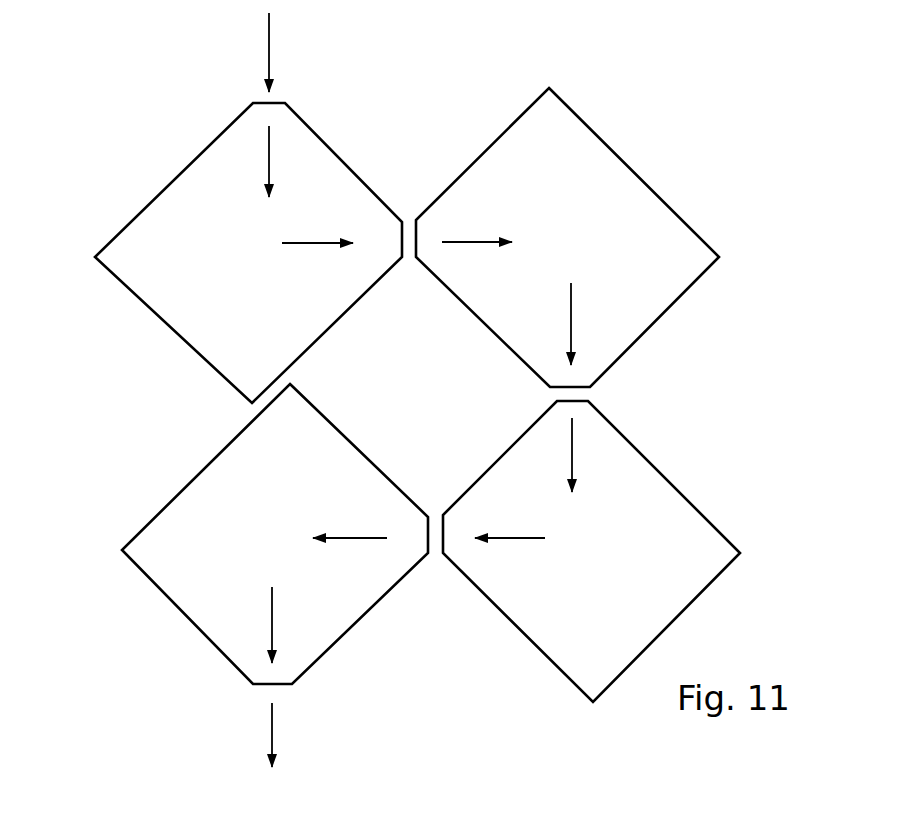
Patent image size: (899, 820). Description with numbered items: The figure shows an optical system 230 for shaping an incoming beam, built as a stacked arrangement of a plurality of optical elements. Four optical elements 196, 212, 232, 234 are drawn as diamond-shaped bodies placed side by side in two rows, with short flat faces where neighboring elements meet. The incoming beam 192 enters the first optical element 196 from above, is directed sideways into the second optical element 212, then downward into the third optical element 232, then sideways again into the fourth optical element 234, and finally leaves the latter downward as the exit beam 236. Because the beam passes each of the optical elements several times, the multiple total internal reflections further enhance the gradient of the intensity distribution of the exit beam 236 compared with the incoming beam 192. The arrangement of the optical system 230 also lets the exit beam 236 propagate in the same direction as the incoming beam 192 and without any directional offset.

The incoming beam 192 is at (257, 43).
The optical element 196 is at (128, 318).
The optical element 212 is at (685, 202).
The optical system 230 is at (665, 105).
The optical element 232 is at (688, 478).
The optical element 234 is at (143, 608).
The exit beam 236 is at (278, 729).